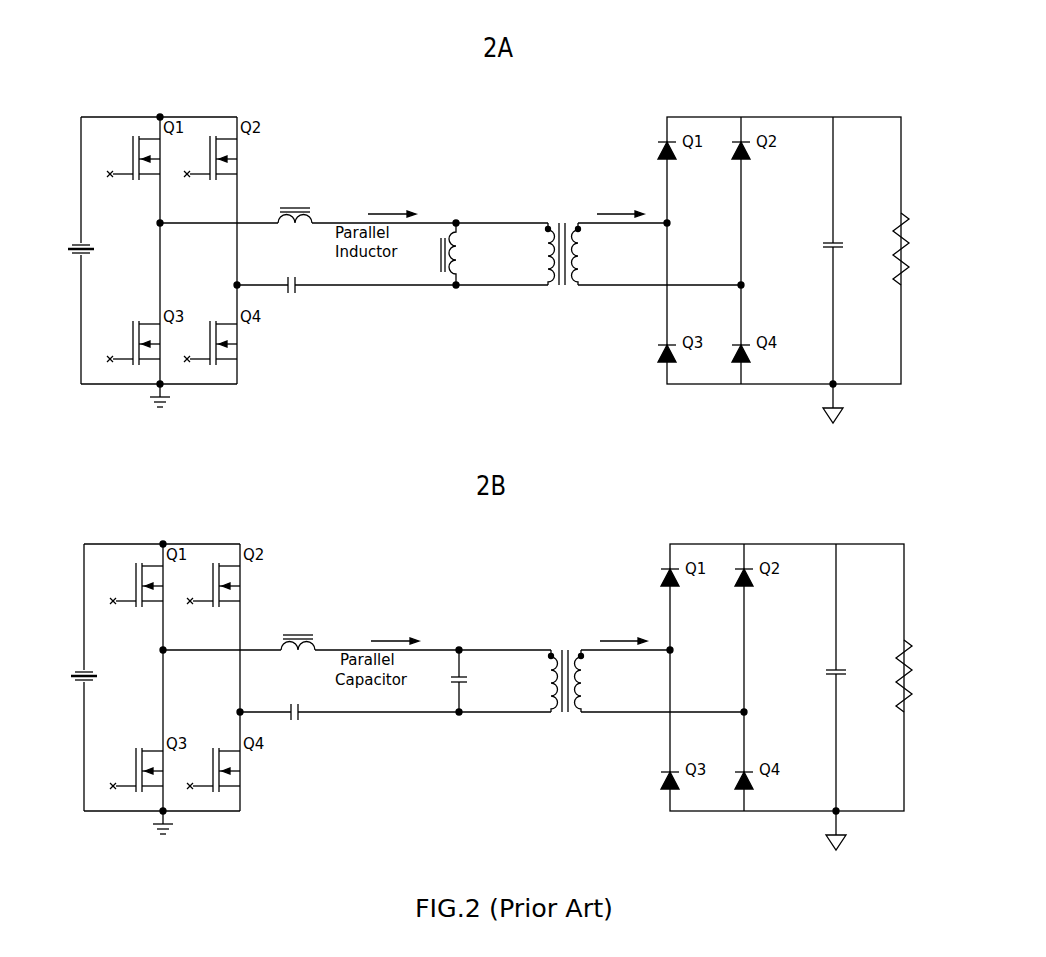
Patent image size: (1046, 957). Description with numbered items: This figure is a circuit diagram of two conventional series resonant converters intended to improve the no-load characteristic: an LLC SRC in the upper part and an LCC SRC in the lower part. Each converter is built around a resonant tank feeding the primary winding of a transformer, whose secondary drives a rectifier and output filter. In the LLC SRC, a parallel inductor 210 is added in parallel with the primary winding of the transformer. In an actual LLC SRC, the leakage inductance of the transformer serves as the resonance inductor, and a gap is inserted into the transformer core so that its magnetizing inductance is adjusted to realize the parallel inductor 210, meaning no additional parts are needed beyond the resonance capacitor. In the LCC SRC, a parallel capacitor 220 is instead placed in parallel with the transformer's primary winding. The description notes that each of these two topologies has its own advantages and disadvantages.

The parallel inductor 210 is at (458, 235).
The parallel capacitor 220 is at (468, 653).